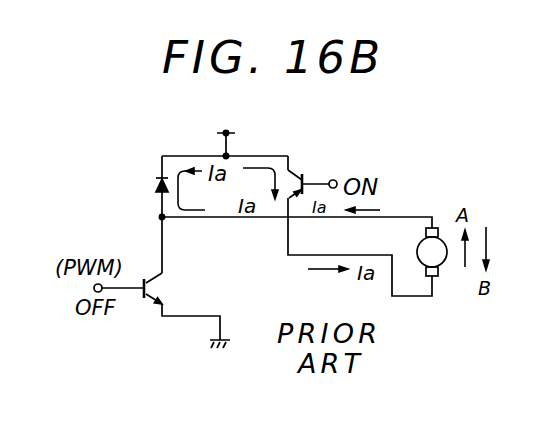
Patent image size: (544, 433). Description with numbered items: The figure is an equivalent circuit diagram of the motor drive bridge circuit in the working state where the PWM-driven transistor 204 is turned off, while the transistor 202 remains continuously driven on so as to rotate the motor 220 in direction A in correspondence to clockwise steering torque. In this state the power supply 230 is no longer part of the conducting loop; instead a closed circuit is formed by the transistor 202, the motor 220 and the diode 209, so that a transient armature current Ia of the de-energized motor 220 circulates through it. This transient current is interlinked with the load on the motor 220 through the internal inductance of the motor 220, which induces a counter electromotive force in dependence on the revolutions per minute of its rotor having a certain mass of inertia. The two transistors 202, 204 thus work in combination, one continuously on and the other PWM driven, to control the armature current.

The power supply 230 is at (236, 132).
The diode 209 is at (153, 183).
The transistor 202 is at (291, 172).
The transistor 204 is at (160, 290).
The motor 220 is at (441, 266).